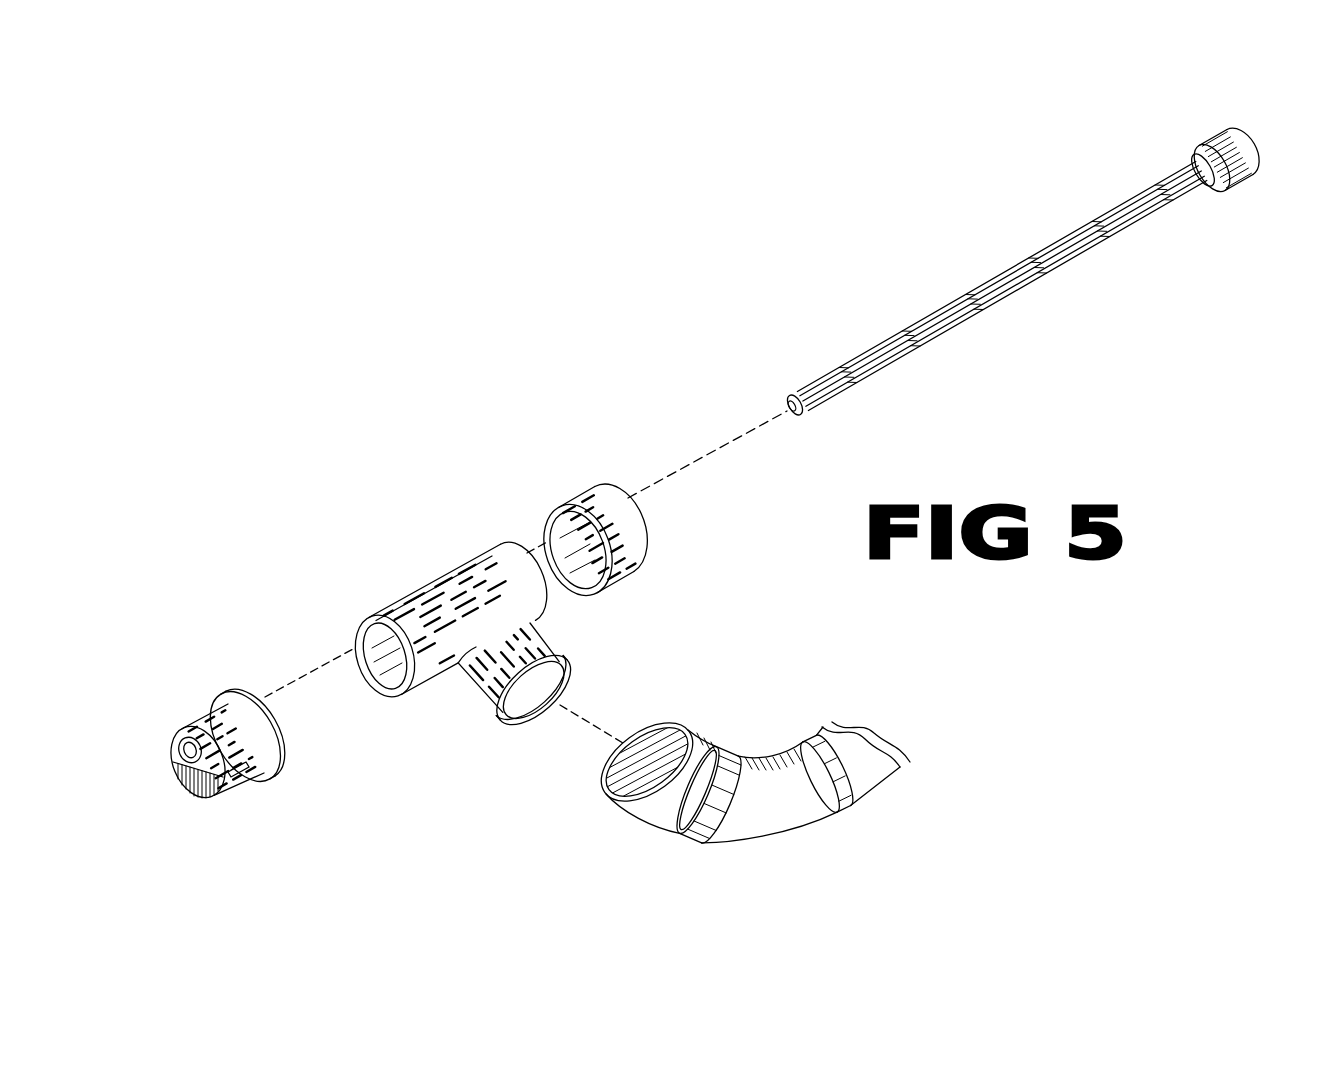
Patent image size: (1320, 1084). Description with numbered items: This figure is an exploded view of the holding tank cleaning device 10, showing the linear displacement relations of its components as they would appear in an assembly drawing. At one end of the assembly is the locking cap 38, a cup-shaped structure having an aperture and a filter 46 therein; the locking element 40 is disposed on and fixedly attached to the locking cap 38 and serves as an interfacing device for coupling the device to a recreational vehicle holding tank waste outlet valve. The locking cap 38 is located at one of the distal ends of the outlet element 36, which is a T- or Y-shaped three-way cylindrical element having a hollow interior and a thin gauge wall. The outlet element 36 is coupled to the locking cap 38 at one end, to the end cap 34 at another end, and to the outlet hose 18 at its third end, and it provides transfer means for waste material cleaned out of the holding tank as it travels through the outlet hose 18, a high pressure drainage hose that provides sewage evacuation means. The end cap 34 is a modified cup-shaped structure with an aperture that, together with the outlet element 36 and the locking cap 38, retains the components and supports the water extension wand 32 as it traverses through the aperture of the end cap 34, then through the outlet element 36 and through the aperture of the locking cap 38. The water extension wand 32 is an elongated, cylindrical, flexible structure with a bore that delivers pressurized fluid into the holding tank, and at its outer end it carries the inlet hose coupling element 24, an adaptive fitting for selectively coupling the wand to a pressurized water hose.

The holding tank cleaning device 10 is at (570, 314).
The outlet hose 18 is at (697, 770).
The inlet hose coupling element 24 is at (1258, 174).
The water extension wand 32 is at (1115, 207).
The end cap 34 is at (612, 495).
The outlet element 36 is at (505, 560).
The locking cap 38 is at (253, 703).
The locking element 40 is at (253, 780).
The filter 46 is at (183, 790).